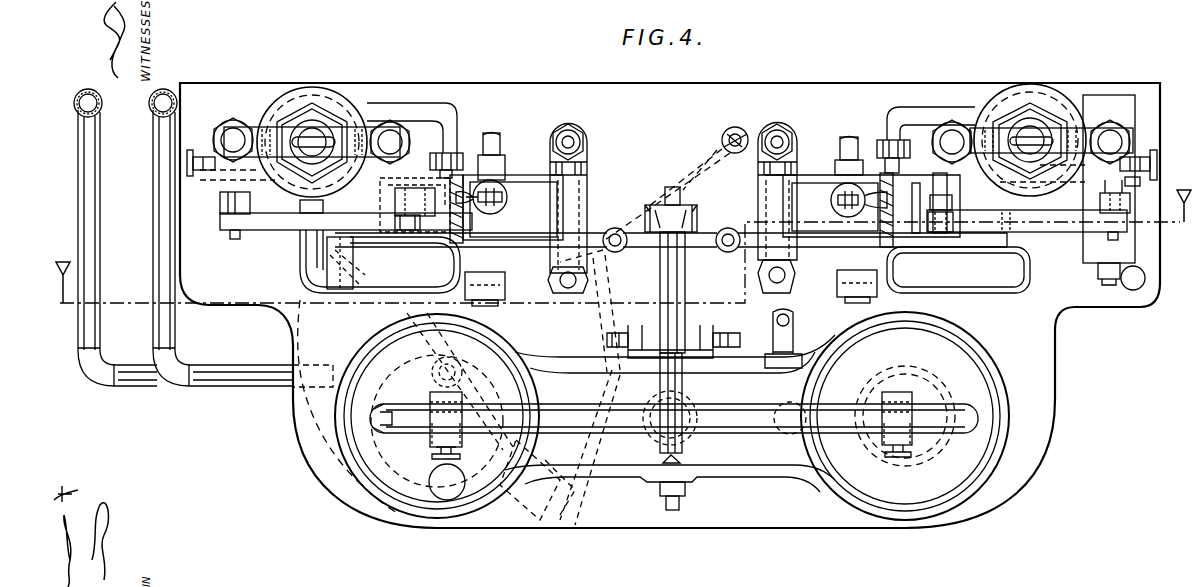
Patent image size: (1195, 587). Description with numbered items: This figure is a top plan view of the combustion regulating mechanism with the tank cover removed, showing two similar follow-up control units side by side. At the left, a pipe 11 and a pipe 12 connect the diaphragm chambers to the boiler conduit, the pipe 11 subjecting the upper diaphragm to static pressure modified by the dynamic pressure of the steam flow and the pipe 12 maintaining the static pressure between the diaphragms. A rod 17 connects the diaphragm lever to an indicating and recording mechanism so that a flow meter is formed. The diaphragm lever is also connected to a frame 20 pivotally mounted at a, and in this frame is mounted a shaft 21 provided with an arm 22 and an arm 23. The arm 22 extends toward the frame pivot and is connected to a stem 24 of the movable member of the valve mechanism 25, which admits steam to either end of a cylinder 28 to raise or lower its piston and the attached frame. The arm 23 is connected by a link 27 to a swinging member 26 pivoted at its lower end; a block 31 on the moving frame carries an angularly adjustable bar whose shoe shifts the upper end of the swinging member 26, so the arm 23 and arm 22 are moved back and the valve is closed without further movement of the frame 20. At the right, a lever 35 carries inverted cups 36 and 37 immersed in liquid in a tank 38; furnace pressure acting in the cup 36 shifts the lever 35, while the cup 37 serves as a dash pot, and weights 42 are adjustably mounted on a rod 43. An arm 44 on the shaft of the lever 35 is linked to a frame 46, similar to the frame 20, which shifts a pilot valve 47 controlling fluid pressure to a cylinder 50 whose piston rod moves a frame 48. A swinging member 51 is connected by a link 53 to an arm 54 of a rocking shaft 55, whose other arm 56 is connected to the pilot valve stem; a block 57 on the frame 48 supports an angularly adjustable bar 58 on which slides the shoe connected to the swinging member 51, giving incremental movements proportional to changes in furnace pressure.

The pipe 11 is at (153, 236).
The pipe 12 is at (77, 207).
The rod 17 is at (738, 140).
The frame 20 is at (527, 176).
The shaft 21 is at (380, 193).
The arm 22 is at (466, 182).
The arm 23 is at (406, 228).
The stem 24 is at (505, 197).
The valve mechanism 25 is at (507, 213).
The swinging member 26 is at (225, 203).
The link 27 is at (290, 230).
The cylinder 28 is at (328, 96).
The block 31 is at (212, 156).
The lever 35 is at (752, 396).
The inverted cup 36 is at (905, 416).
The inverted cup 37 is at (638, 410).
The tank 38 is at (757, 474).
The weights 42 is at (432, 398).
The rod 43 is at (575, 418).
The arm 44 is at (700, 242).
The frame 46 is at (818, 169).
The pilot valve 47 is at (830, 201).
The frame 48 is at (1068, 140).
The cylinder 50 is at (1024, 94).
The swinging member 51 is at (1100, 199).
The link 53 is at (1071, 227).
The arm 54 is at (944, 226).
The rocking shaft 55 is at (948, 203).
The arm 56 is at (918, 208).
The block 57 is at (1130, 162).
The bar 58 is at (1138, 183).
The pivotal point a is at (586, 156).